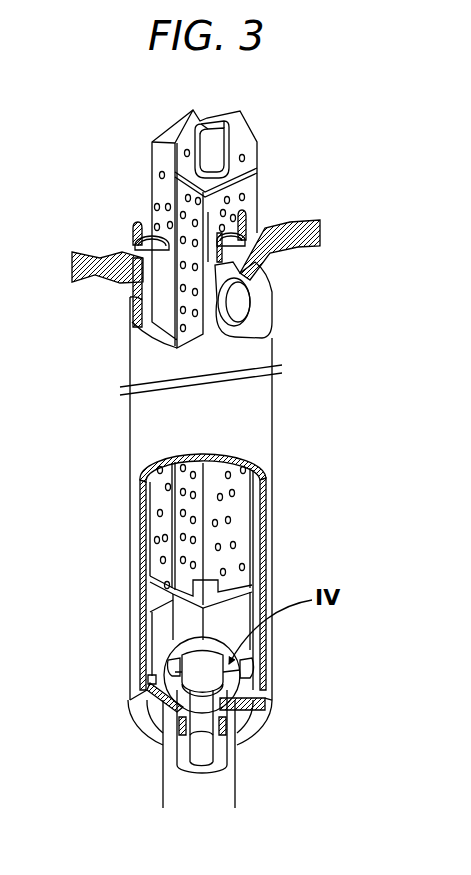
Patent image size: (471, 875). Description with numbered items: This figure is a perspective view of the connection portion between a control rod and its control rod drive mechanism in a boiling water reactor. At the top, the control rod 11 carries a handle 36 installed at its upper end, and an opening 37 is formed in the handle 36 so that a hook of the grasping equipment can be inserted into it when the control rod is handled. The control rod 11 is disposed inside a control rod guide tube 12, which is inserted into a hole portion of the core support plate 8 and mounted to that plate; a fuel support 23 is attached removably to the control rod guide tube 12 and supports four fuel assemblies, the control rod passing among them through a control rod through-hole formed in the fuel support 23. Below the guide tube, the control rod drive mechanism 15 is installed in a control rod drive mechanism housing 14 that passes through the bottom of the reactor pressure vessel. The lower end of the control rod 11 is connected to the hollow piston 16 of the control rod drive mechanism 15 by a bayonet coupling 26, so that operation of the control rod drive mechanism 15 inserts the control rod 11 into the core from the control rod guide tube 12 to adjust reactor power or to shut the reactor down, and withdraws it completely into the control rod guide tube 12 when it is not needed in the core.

The core support plate 8 is at (247, 265).
The control rod 11 is at (197, 327).
The control rod guide tube 12 is at (265, 703).
The control rod drive mechanism housing 14 is at (237, 797).
The control rod drive mechanism 15 is at (190, 758).
The hollow piston 16 is at (200, 725).
The fuel support 23 is at (247, 223).
The bayonet coupling 26 is at (233, 660).
The handle 36 is at (240, 135).
The opening 37 is at (207, 143).